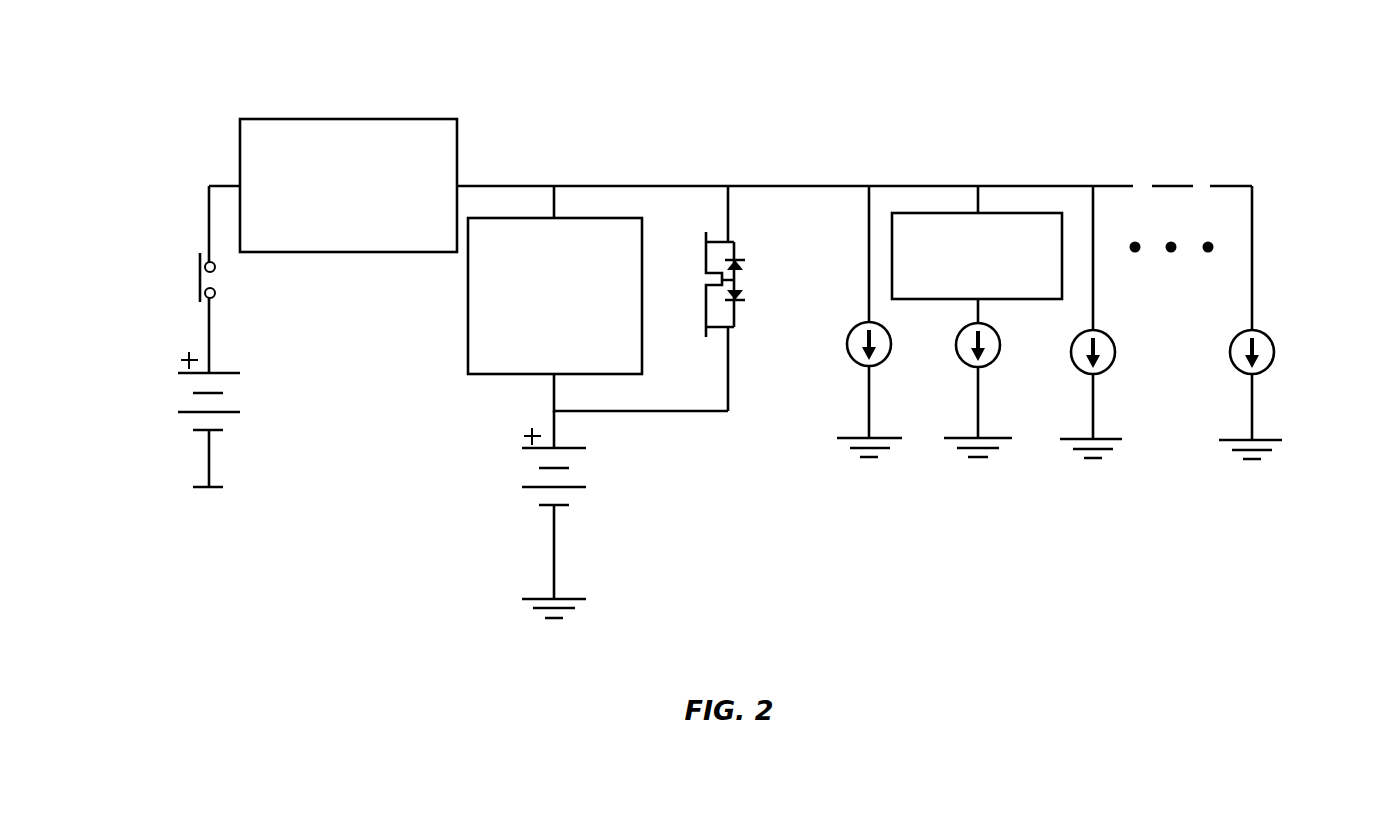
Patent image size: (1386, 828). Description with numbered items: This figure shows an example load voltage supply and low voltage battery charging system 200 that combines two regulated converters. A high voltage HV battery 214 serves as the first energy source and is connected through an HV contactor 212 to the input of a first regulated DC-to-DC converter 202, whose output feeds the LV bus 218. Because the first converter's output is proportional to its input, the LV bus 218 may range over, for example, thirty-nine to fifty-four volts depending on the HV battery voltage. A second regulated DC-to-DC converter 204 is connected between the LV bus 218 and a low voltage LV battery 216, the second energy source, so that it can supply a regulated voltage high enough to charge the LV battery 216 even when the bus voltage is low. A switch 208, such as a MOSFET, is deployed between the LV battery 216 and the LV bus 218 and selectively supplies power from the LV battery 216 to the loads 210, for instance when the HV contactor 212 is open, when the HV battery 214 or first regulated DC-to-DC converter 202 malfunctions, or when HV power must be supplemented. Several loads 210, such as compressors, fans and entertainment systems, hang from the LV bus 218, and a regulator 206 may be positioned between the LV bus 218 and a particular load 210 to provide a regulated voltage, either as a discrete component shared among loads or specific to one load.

The load voltage supply and low voltage battery charging system 200 is at (1129, 62).
The first regulated DC-to-DC converter 202 is at (348, 185).
The second regulated DC-to-DC converter 204 is at (598, 298).
The regulator 206 is at (977, 254).
The switch 208 is at (767, 270).
The loads 210 is at (1273, 342).
The HV contactor 212 is at (160, 284).
The HV battery 214 is at (153, 418).
The LV battery 216 is at (494, 471).
The LV bus 218 is at (915, 186).